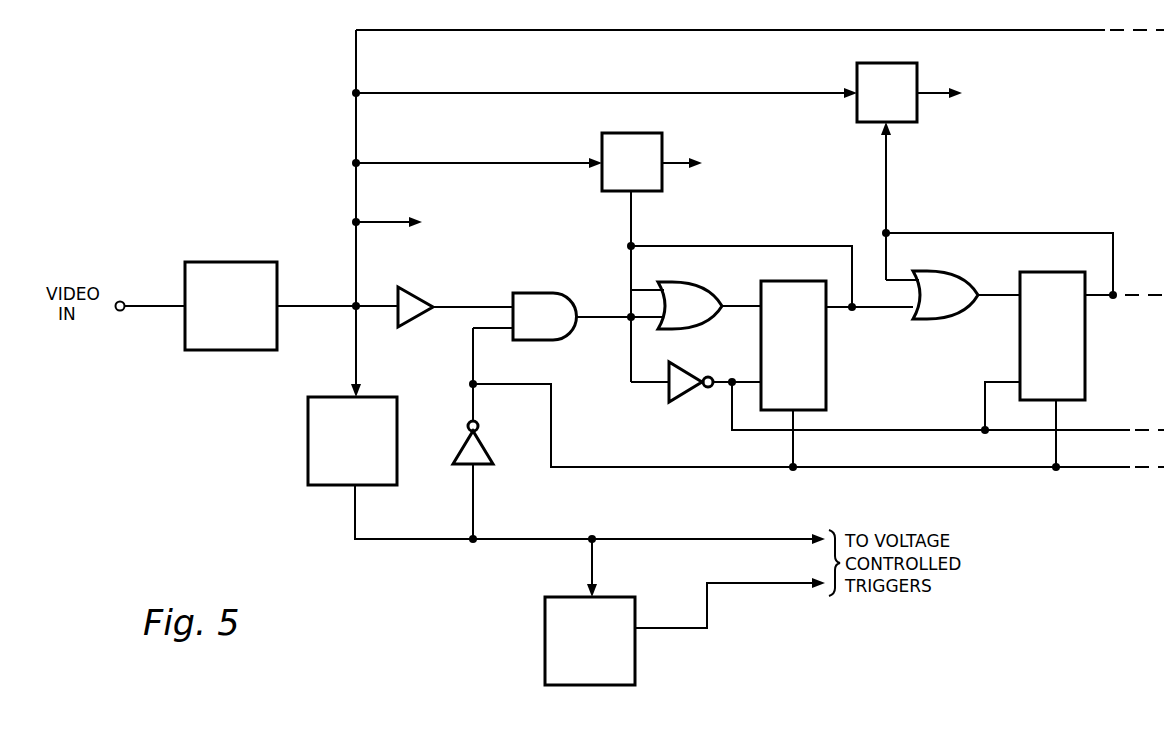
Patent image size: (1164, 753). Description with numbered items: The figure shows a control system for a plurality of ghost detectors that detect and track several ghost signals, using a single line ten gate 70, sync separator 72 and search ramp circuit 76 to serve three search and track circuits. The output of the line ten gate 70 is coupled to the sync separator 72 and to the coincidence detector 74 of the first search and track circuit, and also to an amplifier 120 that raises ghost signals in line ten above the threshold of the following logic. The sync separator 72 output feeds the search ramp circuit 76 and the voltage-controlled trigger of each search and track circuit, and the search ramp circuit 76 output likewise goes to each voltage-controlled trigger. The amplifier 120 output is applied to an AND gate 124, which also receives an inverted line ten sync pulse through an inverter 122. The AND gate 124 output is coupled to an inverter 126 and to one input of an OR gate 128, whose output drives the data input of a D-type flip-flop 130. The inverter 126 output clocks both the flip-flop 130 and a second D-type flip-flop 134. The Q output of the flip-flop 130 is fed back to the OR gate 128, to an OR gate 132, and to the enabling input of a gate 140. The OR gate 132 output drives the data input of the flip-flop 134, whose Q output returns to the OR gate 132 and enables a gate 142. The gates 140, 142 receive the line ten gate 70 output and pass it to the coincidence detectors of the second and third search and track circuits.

The line ten gate 70 is at (229, 262).
The sync separator 72 is at (307, 436).
The coincidence detector 74 is at (448, 226).
The search ramp circuit 76 is at (571, 597).
The amplifier 120 is at (412, 295).
The inverter 122 is at (486, 451).
The AND gate 124 is at (534, 295).
The inverter 126 is at (687, 373).
The OR gate 128 is at (679, 290).
The D-type flip-flop 130 is at (826, 378).
The OR gate 132 is at (938, 320).
The D-type flip-flop 134 is at (1085, 350).
The gate 140 is at (662, 191).
The gate 142 is at (917, 123).